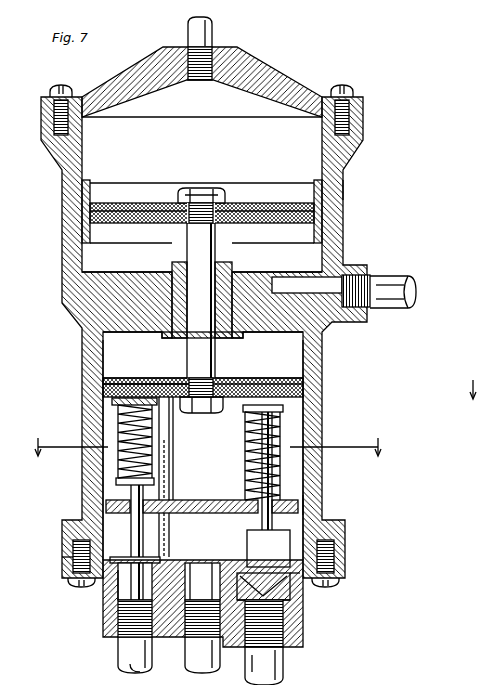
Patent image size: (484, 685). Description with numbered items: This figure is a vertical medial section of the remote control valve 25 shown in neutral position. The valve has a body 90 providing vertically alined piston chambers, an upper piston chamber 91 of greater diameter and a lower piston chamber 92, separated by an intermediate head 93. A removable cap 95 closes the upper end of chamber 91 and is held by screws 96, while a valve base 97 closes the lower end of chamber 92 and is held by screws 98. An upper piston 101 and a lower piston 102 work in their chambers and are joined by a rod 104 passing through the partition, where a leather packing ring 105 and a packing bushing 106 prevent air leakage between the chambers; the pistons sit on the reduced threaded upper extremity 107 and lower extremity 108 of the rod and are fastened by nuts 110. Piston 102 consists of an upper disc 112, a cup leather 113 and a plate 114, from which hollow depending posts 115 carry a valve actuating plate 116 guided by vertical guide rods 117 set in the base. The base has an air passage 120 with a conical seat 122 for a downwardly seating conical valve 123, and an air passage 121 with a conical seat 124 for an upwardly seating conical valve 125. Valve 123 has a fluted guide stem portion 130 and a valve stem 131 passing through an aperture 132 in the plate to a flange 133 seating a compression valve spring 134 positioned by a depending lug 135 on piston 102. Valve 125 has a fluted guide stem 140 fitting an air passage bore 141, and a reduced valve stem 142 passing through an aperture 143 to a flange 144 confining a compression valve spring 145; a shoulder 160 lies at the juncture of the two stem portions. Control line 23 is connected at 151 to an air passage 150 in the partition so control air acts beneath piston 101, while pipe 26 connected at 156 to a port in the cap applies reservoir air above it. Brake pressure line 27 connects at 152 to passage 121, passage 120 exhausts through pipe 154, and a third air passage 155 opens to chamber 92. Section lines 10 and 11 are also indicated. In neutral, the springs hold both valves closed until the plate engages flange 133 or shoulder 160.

The pipe 26 is at (214, 30).
The connection 156 is at (214, 70).
The removable cap 95 is at (264, 82).
The screws 96 is at (356, 101).
The remote control valve 25 is at (346, 192).
The body 90 is at (345, 234).
The connection 151 is at (368, 278).
The control line 23 is at (393, 290).
The air passage 150 is at (342, 295).
The upper piston chamber 91 is at (92, 258).
The intermediate head 93 is at (110, 290).
The leather packing ring 105 is at (184, 264).
The rod 104 is at (197, 257).
The nuts 110 is at (183, 200).
The upper extremity 107 is at (201, 188).
The upper piston 101 is at (268, 204).
The lower piston chamber 92 is at (100, 360).
The packing bushing 106 is at (170, 337).
The upper disc 112 is at (133, 379).
The cup leather 113 is at (158, 379).
The lower piston 102 is at (256, 370).
The plate 114 is at (284, 379).
The depending lug 135 is at (112, 401).
The section line 10 is at (205, 441).
The section line 11 is at (474, 381).
The compression valve spring 134 is at (120, 461).
The head or flange 133 is at (122, 483).
The aperture 132 is at (110, 505).
The valve stem 131 is at (137, 527).
The hollow depending posts 115 is at (172, 440).
The lower extremity 108 is at (192, 413).
The valve actuating plate 116 is at (210, 500).
The vertical guide rods 117 is at (167, 529).
The head or flange 144 is at (284, 412).
The compression valve spring 145 is at (282, 441).
The aperture 143 is at (300, 505).
The reduced valve stem 142 is at (322, 506).
The fluted guide stem 140 is at (290, 540).
The shoulder 160 is at (262, 530).
The conical valve 125 is at (278, 566).
The conical seat 124 is at (240, 575).
The air passage 121 is at (296, 590).
The conical valve 123 is at (125, 557).
The valve base 97 is at (105, 628).
The fluted guide stem portion 130 is at (128, 592).
The air passage 120 is at (118, 582).
The pipe 154 is at (122, 655).
The third air passage 155 is at (205, 566).
The connection 152 is at (300, 641).
The brake pressure line 27 is at (284, 676).
The conical seat 122 is at (72, 572).
The screws 98 is at (333, 580).
The air passage bore 141 is at (336, 598).